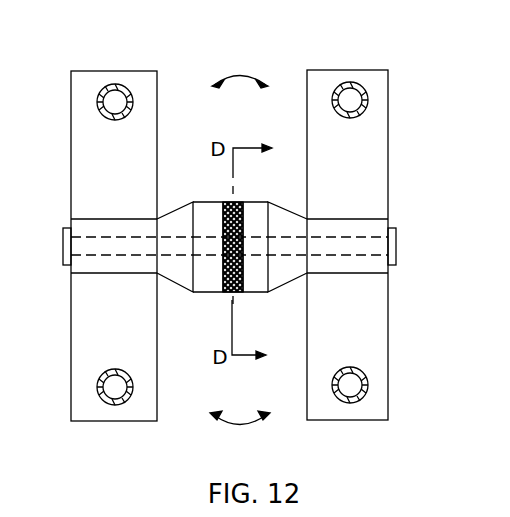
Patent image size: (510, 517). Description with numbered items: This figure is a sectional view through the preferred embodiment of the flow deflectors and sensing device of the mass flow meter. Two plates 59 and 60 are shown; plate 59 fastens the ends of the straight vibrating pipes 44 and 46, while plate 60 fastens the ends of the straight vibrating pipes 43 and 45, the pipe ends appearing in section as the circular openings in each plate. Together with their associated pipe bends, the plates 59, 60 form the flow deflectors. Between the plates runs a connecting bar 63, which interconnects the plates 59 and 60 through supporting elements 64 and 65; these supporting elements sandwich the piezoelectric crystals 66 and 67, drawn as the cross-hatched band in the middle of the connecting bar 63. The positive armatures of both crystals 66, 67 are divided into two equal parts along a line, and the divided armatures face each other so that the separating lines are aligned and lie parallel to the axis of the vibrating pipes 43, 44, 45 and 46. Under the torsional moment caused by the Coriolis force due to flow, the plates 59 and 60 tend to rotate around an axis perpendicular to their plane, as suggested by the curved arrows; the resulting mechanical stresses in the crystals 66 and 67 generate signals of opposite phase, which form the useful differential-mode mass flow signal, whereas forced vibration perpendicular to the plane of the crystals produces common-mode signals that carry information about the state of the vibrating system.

The straight vibrating pipe 43 is at (355, 401).
The straight vibrating pipe 44 is at (101, 402).
The straight vibrating pipe 45 is at (350, 83).
The straight vibrating pipe 46 is at (107, 86).
The plate 59 is at (147, 83).
The plate 60 is at (383, 88).
The connecting bar 63 is at (62, 237).
The supporting element 64 is at (180, 213).
The supporting element 65 is at (283, 217).
The piezoelectric crystal 66 is at (228, 290).
The piezoelectric crystal 67 is at (240, 290).